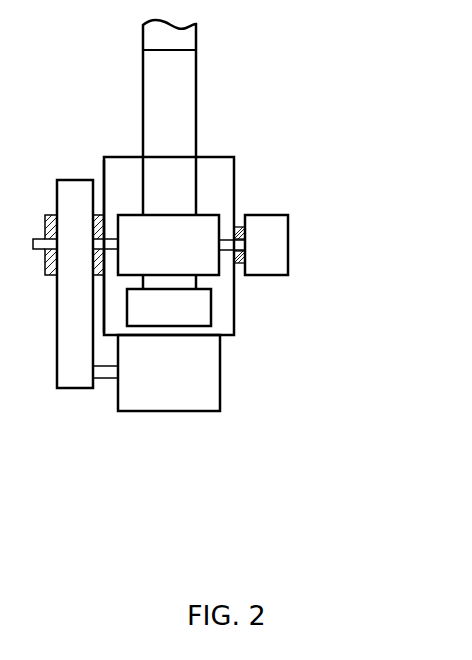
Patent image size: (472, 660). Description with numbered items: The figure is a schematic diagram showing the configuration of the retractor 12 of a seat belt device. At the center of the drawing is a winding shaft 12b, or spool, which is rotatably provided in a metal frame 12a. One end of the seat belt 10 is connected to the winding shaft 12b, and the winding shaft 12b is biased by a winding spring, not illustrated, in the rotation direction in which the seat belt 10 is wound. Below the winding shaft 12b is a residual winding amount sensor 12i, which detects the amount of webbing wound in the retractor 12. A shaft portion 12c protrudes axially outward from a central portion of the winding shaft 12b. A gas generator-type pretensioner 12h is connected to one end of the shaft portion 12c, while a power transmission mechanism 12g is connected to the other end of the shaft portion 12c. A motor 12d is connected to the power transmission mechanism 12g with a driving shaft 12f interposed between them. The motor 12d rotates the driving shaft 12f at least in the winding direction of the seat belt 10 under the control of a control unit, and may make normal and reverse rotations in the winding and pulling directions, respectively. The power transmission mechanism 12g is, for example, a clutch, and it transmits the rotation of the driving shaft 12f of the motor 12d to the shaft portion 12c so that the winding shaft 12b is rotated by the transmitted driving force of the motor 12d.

The seat belt 10 is at (190, 67).
The retractor 12 is at (223, 248).
The metal frame 12a is at (237, 163).
The winding shaft 12b is at (205, 215).
The shaft portion 12c is at (110, 243).
The motor 12d is at (182, 412).
The driving shaft 12f is at (107, 380).
The power transmission mechanism 12g is at (75, 187).
The gas generator-type pretensioner 12h is at (291, 228).
The residual winding amount sensor 12i is at (210, 305).